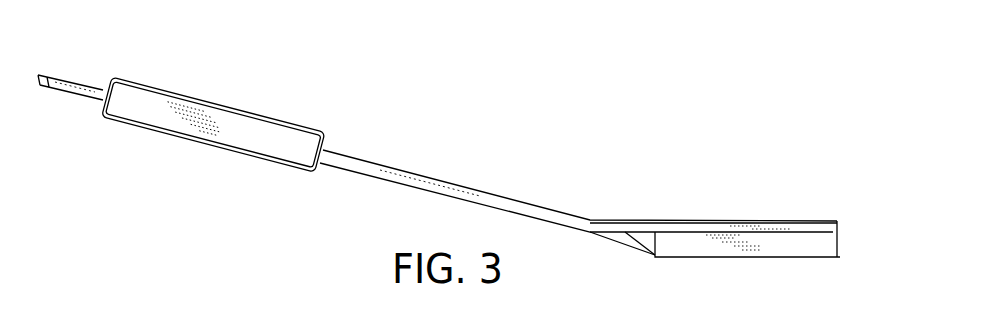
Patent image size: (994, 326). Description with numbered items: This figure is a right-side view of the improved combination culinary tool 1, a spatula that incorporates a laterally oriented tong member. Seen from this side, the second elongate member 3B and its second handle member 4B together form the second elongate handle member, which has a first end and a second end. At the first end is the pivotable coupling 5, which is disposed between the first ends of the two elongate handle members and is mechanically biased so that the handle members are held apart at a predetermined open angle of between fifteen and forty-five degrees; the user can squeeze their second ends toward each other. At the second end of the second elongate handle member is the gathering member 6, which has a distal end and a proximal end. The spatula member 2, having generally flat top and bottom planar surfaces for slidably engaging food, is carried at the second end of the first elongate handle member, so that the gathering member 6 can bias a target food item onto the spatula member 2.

The improved combination culinary tool 1 is at (655, 78).
The spatula member 2 is at (631, 245).
The second elongate member 3B is at (473, 190).
The second handle member 4B is at (213, 108).
The pivotable coupling 5 is at (43, 73).
The gathering member 6 is at (724, 221).